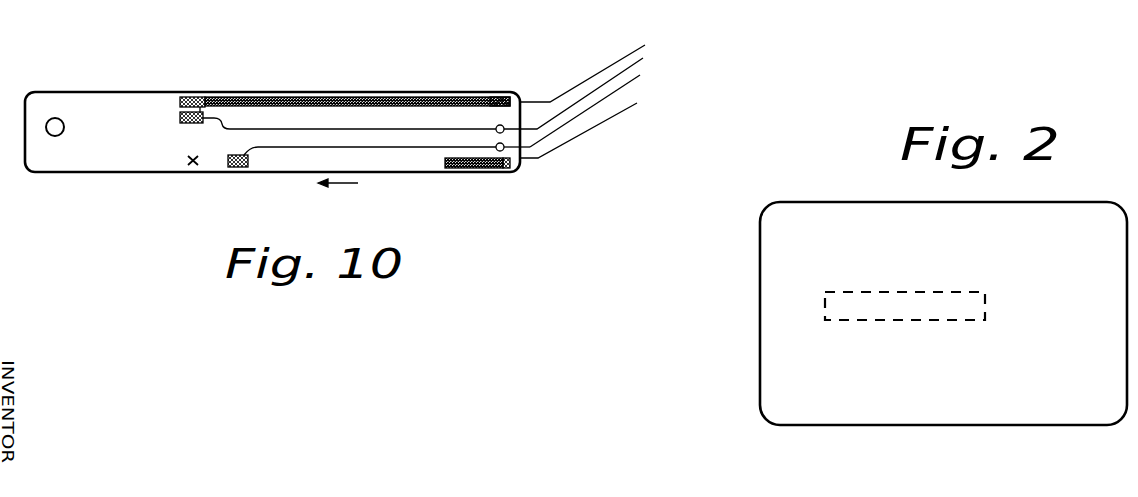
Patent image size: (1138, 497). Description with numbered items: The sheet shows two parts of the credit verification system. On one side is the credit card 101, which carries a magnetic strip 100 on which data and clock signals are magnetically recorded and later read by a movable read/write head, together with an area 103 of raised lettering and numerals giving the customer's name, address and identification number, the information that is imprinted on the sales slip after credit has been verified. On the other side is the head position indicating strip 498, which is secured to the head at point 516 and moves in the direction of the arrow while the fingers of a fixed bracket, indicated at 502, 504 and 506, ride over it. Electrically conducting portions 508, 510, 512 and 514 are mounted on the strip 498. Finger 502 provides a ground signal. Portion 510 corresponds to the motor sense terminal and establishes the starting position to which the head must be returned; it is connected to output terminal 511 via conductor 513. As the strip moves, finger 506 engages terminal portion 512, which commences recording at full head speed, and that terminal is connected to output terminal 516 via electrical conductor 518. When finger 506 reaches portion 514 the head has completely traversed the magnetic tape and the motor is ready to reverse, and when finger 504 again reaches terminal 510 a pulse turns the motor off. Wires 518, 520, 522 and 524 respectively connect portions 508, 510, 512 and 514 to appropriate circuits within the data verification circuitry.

In FIG. 10, the head position indicating strip 498 is at (108, 98).
In FIG. 10, the finger 502 is at (180, 101).
In FIG. 10, the finger 504 is at (180, 118).
In FIG. 10, the finger 506 is at (188, 160).
In FIG. 10, the electrically conducting portion 508 is at (370, 100).
In FIG. 10, the electrically conducting portion 510 is at (203, 116).
In FIG. 10, the output terminal 511 is at (301, 131).
In FIG. 10, the electrically conducting portion 512 is at (228, 162).
In FIG. 10, the conductor 513 is at (497, 125).
In FIG. 10, the electrically conducting portion 514 is at (453, 172).
In FIG. 10, the output terminal 516 is at (522, 150).
In FIG. 10, the wire 518 is at (392, 150).
In FIG. 10, the wire 520 is at (634, 76).
In FIG. 10, the wire 522 is at (641, 93).
In FIG. 10, the wire 524 is at (640, 106).
In FIG. 2, the magnetic strip 100 is at (934, 263).
In FIG. 2, the card 101 is at (760, 283).
In FIG. 2, the dotted area 103 is at (815, 382).